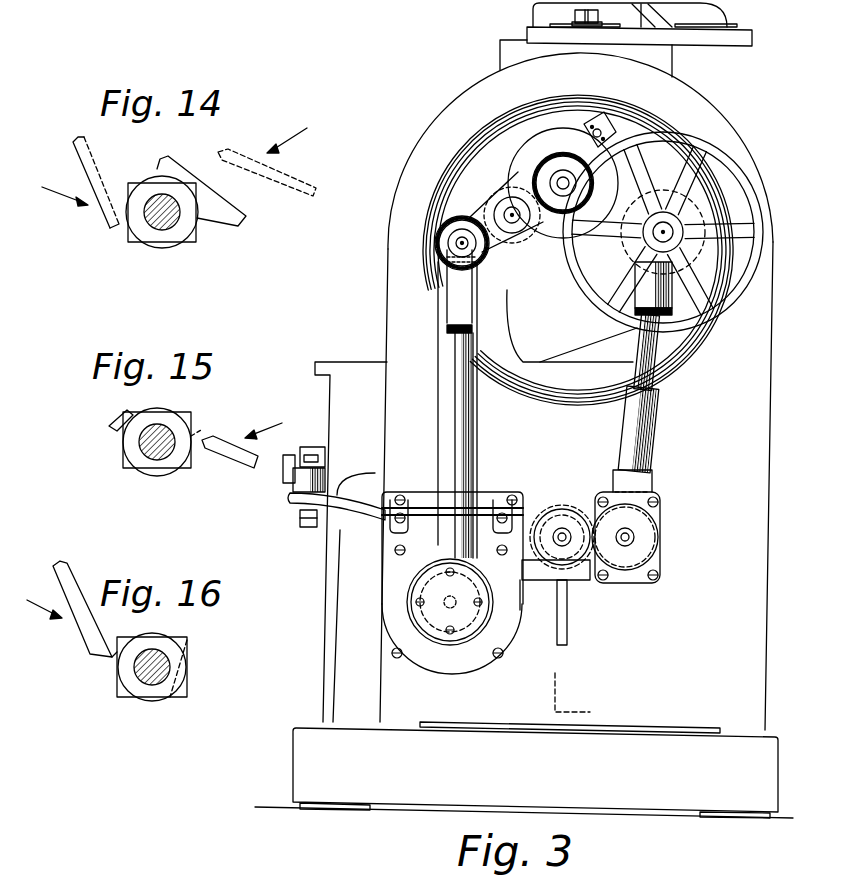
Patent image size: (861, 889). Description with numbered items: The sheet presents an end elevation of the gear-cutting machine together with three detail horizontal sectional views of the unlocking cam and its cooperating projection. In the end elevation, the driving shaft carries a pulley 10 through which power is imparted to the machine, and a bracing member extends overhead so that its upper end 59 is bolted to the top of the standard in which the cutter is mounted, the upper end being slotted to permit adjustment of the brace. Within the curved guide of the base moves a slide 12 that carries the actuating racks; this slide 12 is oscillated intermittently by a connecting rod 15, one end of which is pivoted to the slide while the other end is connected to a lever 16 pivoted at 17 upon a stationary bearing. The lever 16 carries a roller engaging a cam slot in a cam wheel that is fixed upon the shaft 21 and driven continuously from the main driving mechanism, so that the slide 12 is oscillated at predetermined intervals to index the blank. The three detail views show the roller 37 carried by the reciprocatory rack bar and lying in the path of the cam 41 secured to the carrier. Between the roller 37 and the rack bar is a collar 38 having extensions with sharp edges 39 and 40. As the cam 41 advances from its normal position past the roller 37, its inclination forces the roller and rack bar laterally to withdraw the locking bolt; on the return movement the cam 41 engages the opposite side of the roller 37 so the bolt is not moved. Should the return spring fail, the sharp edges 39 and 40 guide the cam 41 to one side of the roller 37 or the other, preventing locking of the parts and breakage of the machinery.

In FIG. 3, the pulley 10 is at (728, 300).
In FIG. 3, the upper end of the brace 59 is at (717, 37).
In FIG. 3, the slide 12 is at (320, 450).
In FIG. 3, the connecting rod 15 is at (325, 478).
In FIG. 3, the lever 16 is at (358, 510).
In FIG. 3, the pivot 17 is at (582, 565).
In FIG. 3, the shaft 21 is at (448, 608).
In FIG. 14, the roller 37 is at (165, 247).
In FIG. 15, the roller 37 is at (153, 477).
In FIG. 16, the roller 37 is at (153, 698).
In FIG. 14, the collar 38 is at (148, 234).
In FIG. 15, the collar 38 is at (140, 462).
In FIG. 16, the collar 38 is at (137, 682).
In FIG. 14, the edge of collar extension 39 is at (197, 222).
In FIG. 15, the edge of collar extension 39 is at (195, 440).
In FIG. 16, the edge of collar extension 39 is at (198, 670).
In FIG. 14, the edge of collar extension 40 is at (128, 190).
In FIG. 15, the edge of collar extension 40 is at (122, 438).
In FIG. 16, the edge of collar extension 40 is at (110, 658).
In FIG. 14, the cam 41 is at (228, 218).
In FIG. 15, the cam 41 is at (240, 457).
In FIG. 16, the cam 41 is at (83, 620).